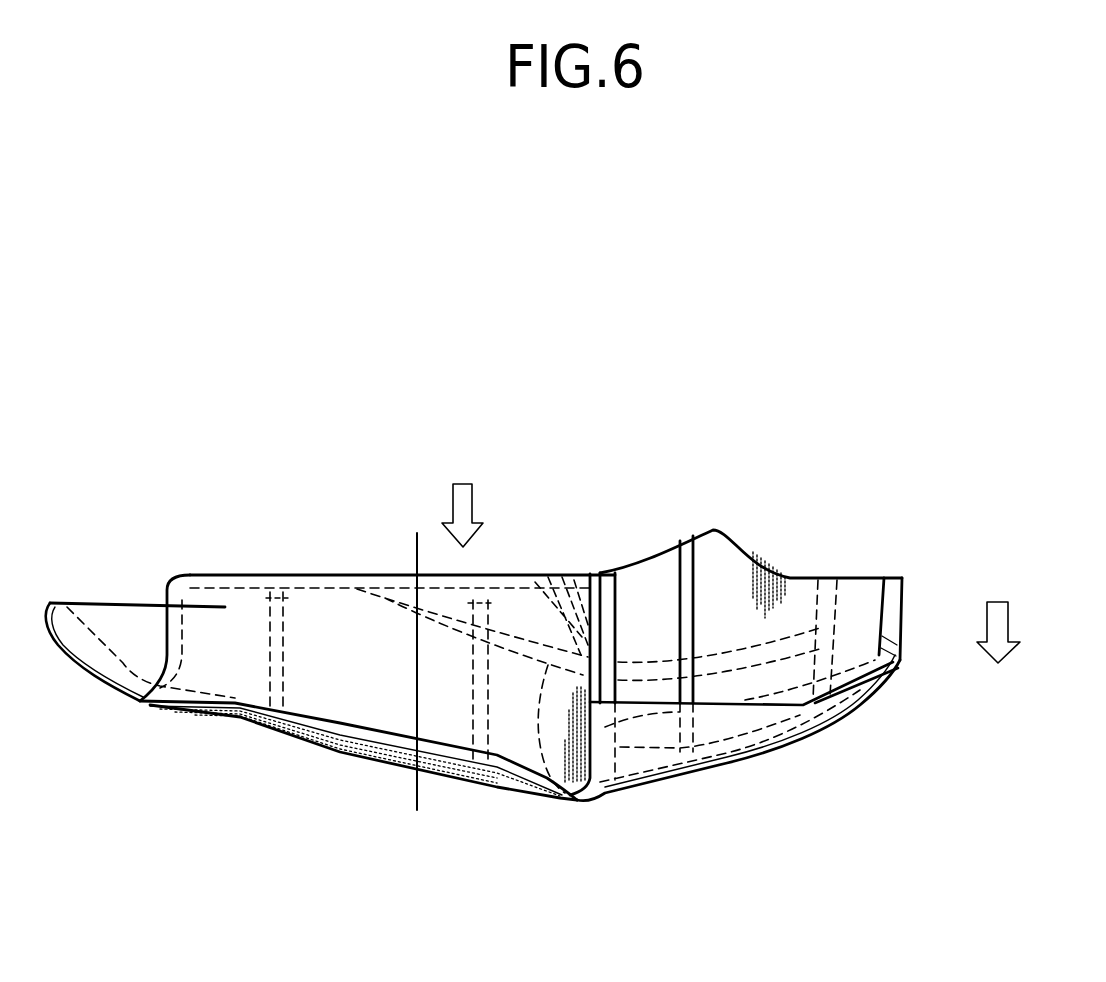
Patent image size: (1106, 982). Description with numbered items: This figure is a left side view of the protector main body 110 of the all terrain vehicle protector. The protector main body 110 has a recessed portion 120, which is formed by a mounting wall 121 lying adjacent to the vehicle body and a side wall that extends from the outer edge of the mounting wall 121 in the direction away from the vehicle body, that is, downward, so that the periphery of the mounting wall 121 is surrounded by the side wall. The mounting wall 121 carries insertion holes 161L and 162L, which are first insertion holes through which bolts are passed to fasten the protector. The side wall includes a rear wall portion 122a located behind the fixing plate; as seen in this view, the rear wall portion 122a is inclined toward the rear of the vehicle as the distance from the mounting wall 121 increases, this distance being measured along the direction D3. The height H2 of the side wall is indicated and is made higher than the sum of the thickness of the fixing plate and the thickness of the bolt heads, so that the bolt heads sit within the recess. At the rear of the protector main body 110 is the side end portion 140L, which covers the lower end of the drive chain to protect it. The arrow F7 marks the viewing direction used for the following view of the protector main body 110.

The protector main body 110 is at (893, 575).
The recessed portion 120 is at (352, 733).
The mounting wall 121 is at (342, 574).
The rear wall portion 122a is at (560, 796).
The side end portion 140L is at (733, 768).
The insertion hole 161L is at (237, 574).
The insertion hole 162L is at (487, 577).
The height of the side wall H2 is at (415, 705).
The arrow F7 is at (475, 500).
The direction D3 is at (1005, 620).